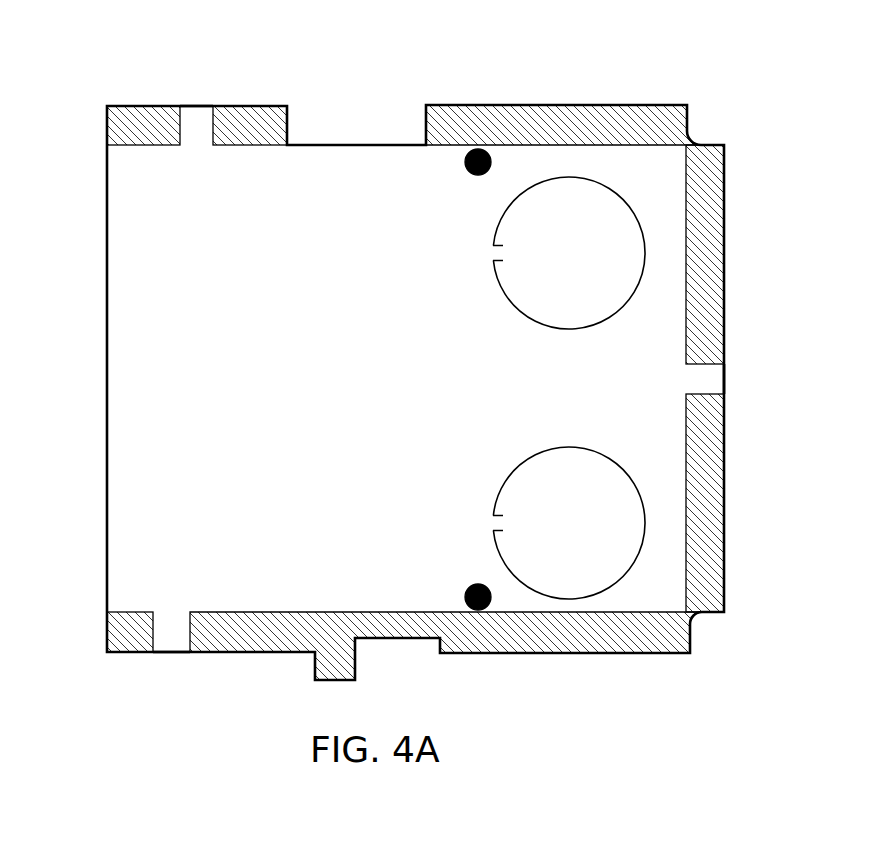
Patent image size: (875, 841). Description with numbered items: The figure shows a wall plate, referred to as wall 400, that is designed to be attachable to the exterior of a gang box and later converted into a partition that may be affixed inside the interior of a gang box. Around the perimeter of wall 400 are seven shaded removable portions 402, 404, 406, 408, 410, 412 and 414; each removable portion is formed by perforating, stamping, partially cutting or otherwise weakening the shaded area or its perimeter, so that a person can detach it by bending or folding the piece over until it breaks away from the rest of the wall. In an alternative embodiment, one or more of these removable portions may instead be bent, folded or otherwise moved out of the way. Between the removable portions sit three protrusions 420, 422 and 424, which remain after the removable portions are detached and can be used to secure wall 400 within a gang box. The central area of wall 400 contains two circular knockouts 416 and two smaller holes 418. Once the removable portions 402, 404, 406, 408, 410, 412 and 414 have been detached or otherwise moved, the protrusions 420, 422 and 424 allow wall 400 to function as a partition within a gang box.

The wall 400 is at (140, 210).
The removable portion 402 is at (128, 106).
The removable portion 404 is at (265, 106).
The removable portion 406 is at (530, 105).
The removable portion 408 is at (715, 210).
The removable portion 410 is at (722, 515).
The removable portion 412 is at (588, 645).
The removable portion 414 is at (123, 655).
The knockouts 416 is at (610, 500).
The holes 418 is at (462, 170).
The protrusion 420 is at (190, 106).
The protrusion 422 is at (168, 648).
The protrusion 424 is at (699, 383).